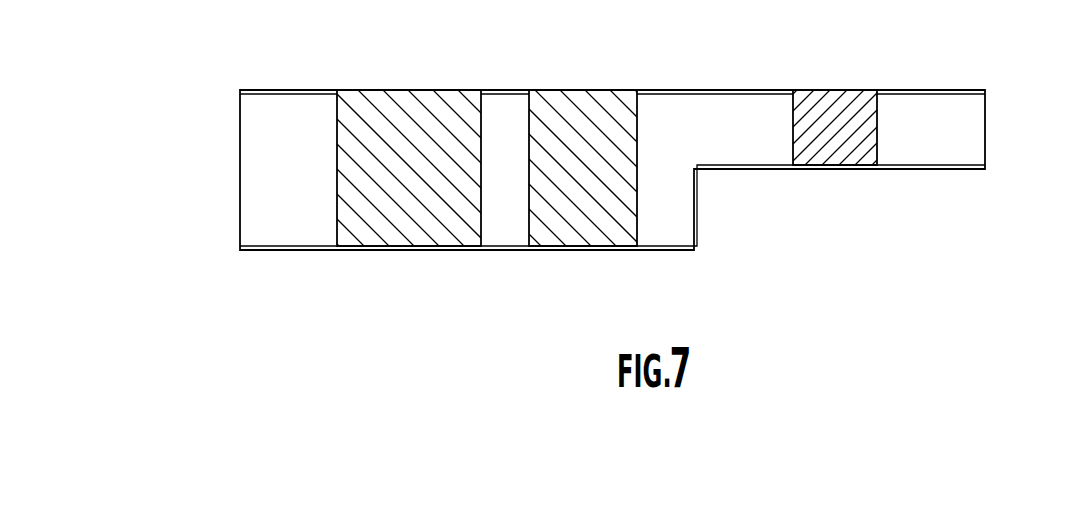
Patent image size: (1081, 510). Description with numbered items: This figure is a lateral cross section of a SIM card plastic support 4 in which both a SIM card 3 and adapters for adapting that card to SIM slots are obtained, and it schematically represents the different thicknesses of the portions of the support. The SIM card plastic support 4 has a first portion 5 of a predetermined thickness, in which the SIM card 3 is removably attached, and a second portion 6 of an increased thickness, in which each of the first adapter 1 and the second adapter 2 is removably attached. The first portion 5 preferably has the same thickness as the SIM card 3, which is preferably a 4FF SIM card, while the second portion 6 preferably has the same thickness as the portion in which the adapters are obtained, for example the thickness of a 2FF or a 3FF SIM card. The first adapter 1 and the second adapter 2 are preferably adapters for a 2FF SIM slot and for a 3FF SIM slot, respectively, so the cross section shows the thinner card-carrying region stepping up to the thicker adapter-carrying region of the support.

The first adapter 1 is at (413, 228).
The second adapter 2 is at (590, 230).
The SIM card 3 is at (843, 90).
The SIM card plastic support 4 is at (295, 90).
The first portion 5 is at (973, 136).
The second portion 6 is at (278, 170).